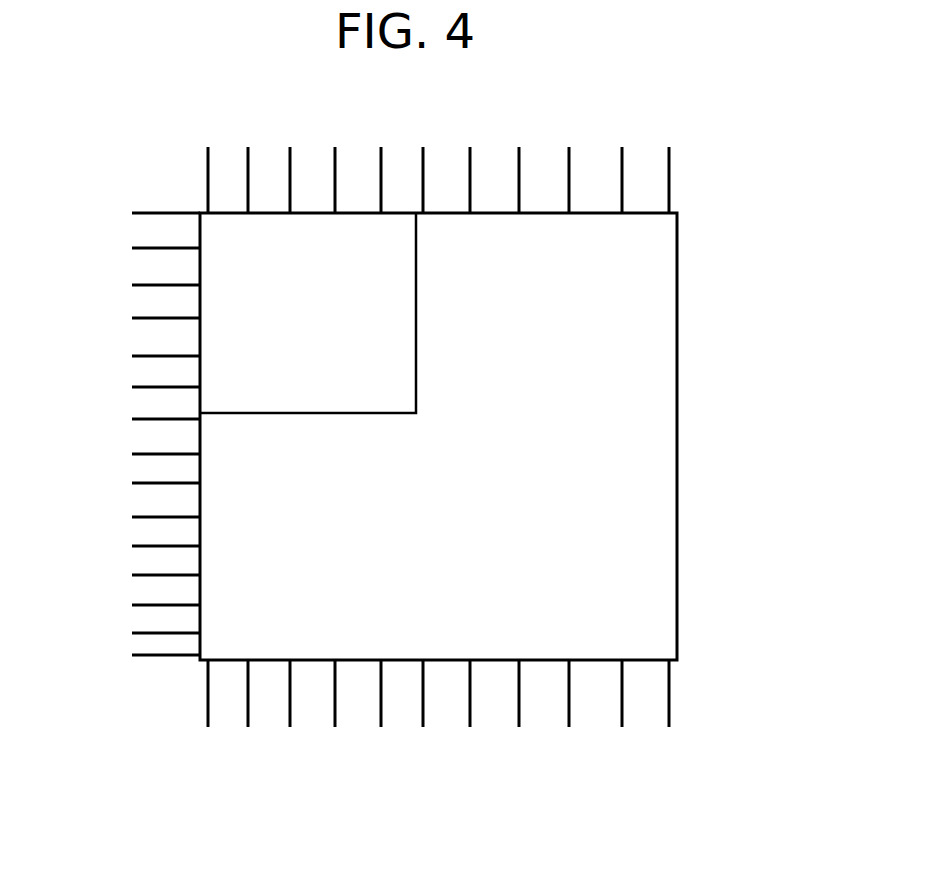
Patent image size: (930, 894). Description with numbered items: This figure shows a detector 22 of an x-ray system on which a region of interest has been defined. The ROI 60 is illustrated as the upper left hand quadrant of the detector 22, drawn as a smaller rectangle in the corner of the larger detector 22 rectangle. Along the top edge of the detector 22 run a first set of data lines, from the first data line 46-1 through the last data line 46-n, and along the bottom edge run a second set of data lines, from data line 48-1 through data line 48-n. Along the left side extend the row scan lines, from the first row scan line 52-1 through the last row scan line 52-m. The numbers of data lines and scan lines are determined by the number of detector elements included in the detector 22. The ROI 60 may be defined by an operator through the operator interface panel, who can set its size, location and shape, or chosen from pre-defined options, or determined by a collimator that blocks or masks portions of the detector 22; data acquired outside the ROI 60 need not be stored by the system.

The detector 22 is at (677, 436).
The ROI 60 is at (240, 310).
The data line 46-1 is at (209, 159).
The data line 46-n is at (669, 168).
The data line 48-1 is at (207, 695).
The data line 48-n is at (671, 693).
The row scan line 52-1 is at (152, 212).
The row scan line 52-m is at (165, 656).